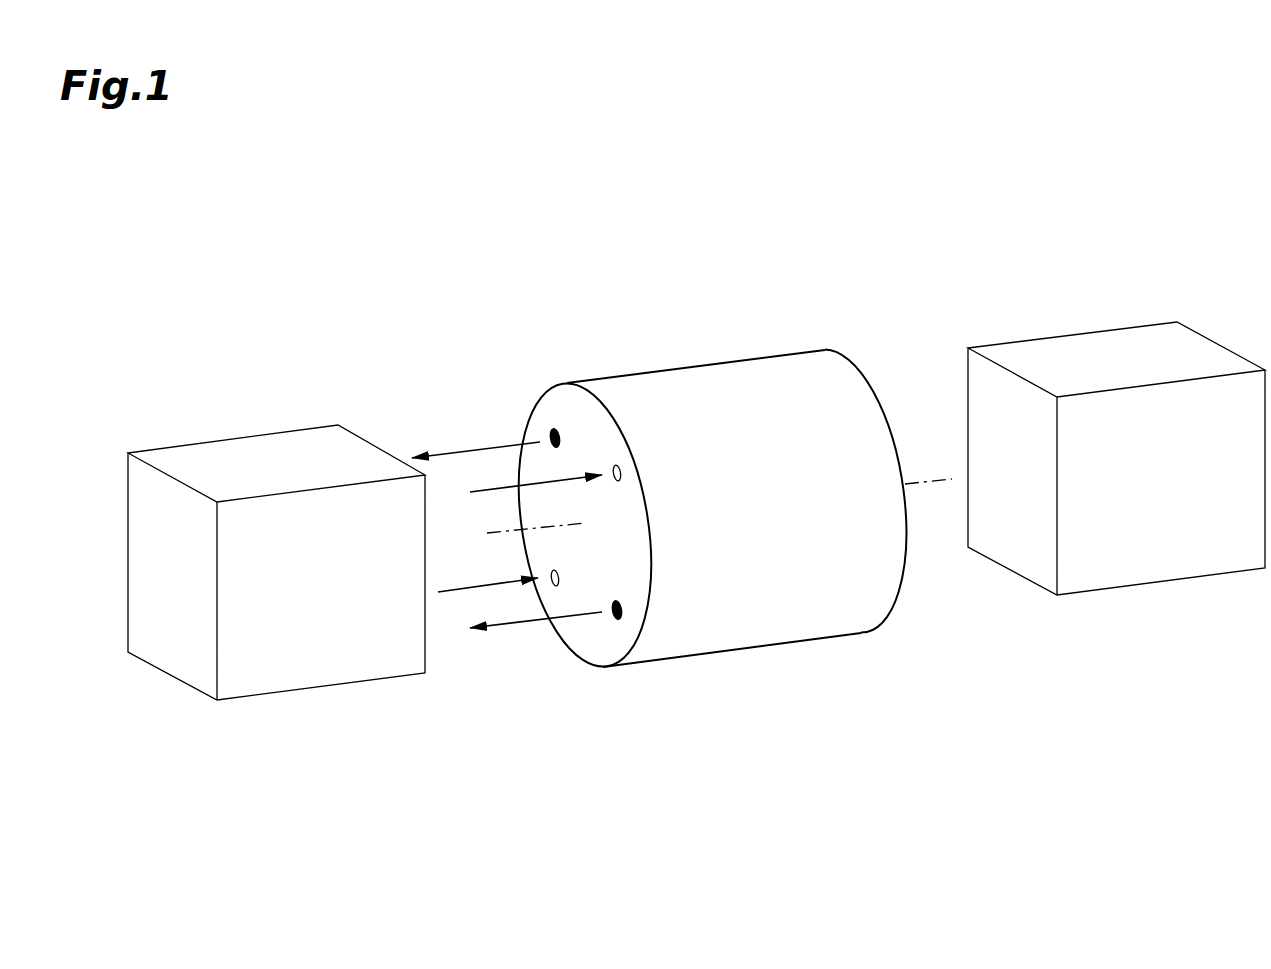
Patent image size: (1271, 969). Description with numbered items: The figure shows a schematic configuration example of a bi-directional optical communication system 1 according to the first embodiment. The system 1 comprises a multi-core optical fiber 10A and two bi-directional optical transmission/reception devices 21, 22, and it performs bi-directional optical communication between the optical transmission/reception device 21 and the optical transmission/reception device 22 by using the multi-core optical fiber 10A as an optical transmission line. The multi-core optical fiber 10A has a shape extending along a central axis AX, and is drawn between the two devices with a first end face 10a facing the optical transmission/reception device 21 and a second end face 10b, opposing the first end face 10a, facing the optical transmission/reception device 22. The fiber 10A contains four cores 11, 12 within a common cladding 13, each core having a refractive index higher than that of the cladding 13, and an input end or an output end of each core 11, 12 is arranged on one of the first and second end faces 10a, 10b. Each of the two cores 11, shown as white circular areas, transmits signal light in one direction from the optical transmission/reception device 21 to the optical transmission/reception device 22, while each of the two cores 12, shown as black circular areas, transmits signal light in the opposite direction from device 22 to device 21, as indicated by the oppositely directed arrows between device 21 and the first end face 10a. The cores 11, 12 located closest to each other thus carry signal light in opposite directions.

The bi-directional optical communication system 1 is at (893, 222).
The multi-core optical fiber 10A is at (765, 384).
The first end face 10a is at (565, 402).
The second end face 10b is at (865, 376).
The core 11 is at (613, 466).
The core 12 is at (548, 437).
The cladding 13 is at (585, 640).
The bi-directional optical transmission/reception device 21 is at (287, 450).
The bi-directional optical transmission/reception device 22 is at (1116, 352).
The central axis AX is at (698, 515).